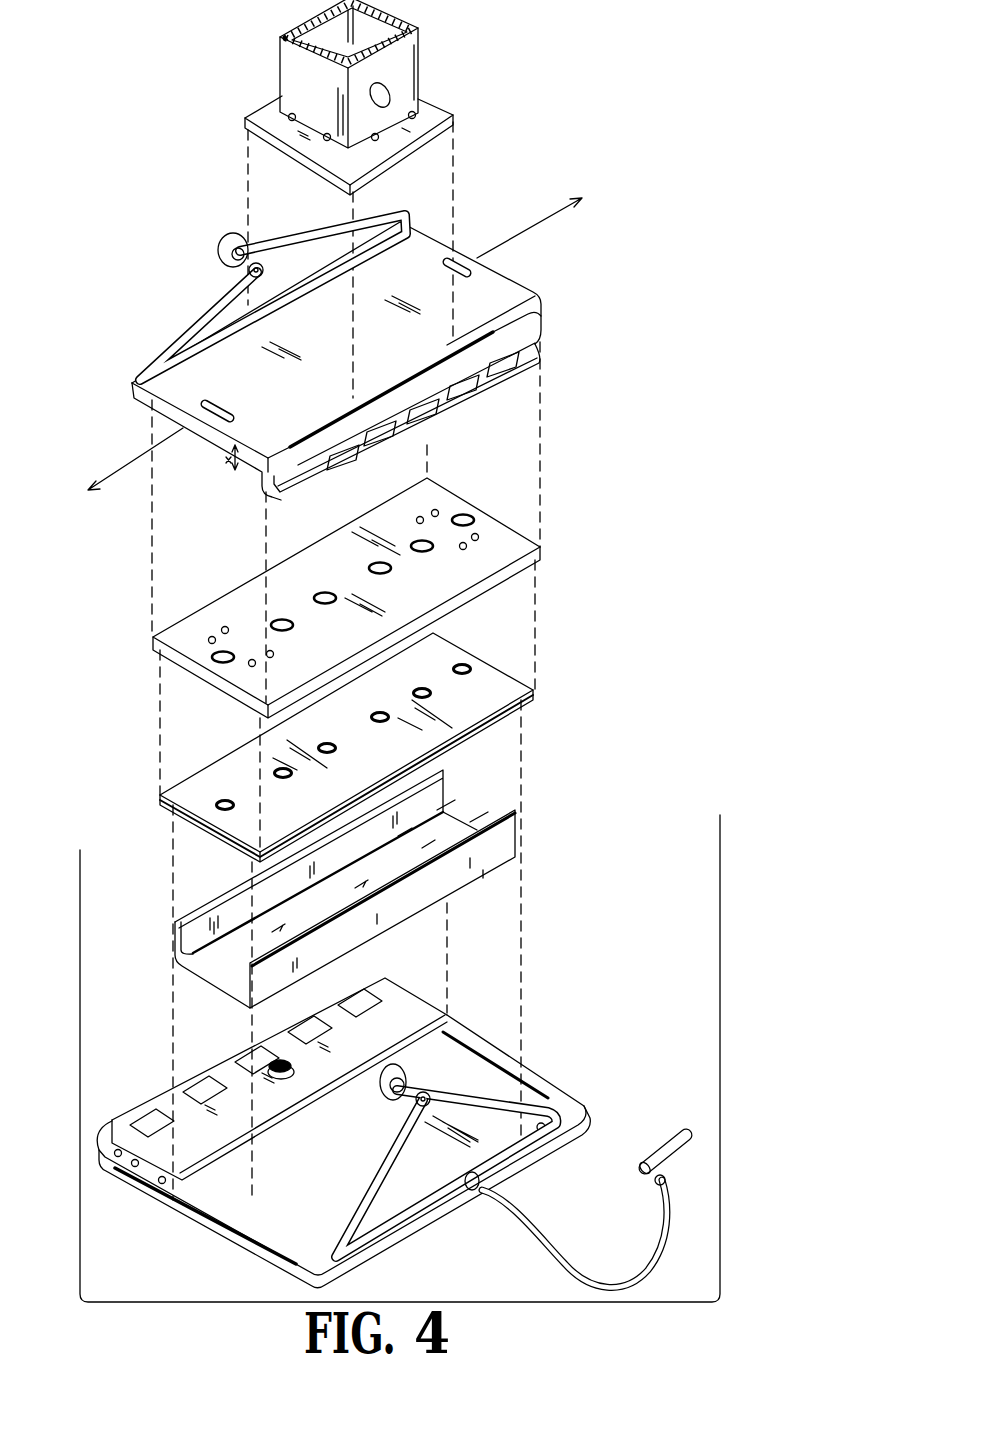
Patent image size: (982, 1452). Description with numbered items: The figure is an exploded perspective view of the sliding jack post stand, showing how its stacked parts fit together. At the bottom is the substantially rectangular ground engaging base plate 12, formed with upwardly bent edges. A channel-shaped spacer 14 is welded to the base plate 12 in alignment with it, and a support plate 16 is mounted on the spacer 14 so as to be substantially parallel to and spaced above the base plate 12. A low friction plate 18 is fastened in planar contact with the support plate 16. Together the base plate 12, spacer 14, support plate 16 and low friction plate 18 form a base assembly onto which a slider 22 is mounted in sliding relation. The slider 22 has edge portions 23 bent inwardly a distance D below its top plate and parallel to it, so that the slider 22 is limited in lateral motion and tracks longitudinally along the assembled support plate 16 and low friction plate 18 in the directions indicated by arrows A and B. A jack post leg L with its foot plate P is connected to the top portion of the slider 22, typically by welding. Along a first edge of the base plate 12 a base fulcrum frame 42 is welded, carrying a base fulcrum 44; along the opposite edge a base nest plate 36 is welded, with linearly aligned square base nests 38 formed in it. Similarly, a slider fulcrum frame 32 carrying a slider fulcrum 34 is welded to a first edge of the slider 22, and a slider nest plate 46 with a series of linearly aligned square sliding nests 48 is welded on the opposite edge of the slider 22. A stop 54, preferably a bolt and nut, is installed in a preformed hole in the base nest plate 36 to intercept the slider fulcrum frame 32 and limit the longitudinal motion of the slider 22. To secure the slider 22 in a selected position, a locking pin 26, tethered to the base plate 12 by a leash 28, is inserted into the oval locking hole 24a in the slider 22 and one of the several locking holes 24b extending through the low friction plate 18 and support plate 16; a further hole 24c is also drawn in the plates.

The jack post leg L is at (412, 70).
The foot plate P is at (448, 112).
The base plate 12 is at (570, 1088).
The spacer 14 is at (220, 893).
The support plate 16 is at (222, 767).
The low friction plate 18 is at (222, 603).
The slider 22 is at (530, 290).
The edge portions 23 is at (253, 487).
The locking hole 24a is at (447, 266).
The locking holes 24b is at (460, 513).
The aperture 24c is at (465, 667).
The locking pin 26 is at (670, 1140).
The leash 28 is at (547, 1252).
The slider fulcrum frame 32 is at (310, 233).
The slider fulcrum 34 is at (222, 248).
The base nest plate 36 is at (402, 993).
The base nests 38 is at (315, 1035).
The base fulcrum frame 42 is at (353, 1176).
The base fulcrum 44 is at (383, 1107).
The slider nest plate 46 is at (545, 333).
The sliding nests 48 is at (467, 388).
The stop 54 is at (288, 1064).
The arrow A is at (124, 463).
The arrow B is at (515, 237).
The distance D is at (233, 471).